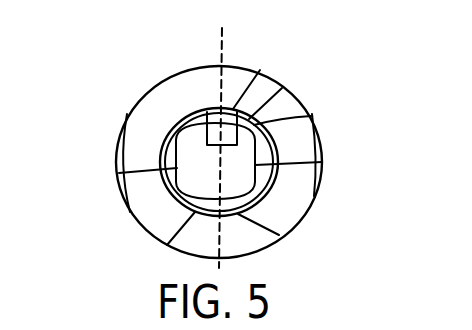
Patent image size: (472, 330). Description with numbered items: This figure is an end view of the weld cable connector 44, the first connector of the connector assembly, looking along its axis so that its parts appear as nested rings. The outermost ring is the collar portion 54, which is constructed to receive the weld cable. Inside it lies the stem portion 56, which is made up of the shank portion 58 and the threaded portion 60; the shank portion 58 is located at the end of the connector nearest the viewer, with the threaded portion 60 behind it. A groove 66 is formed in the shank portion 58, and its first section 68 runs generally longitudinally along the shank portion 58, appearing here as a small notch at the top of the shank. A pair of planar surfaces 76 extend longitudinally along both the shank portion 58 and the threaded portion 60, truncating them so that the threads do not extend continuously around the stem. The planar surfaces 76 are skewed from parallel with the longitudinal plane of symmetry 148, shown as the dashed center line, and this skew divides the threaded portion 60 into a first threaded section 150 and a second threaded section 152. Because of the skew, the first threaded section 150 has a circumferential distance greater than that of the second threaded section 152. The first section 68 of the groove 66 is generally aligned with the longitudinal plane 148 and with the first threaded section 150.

The weld cable connector 44 is at (62, 64).
The collar portion 54 is at (156, 104).
The stem portion 56 is at (315, 184).
The shank portion 58 is at (311, 116).
The threaded portion 60 is at (283, 88).
The groove 66 is at (259, 71).
The first section 68 is at (220, 116).
The planar surfaces 76 is at (119, 173).
The longitudinal plane of symmetry 148 is at (226, 42).
The first threaded section 150 is at (147, 101).
The second threaded section 152 is at (167, 245).